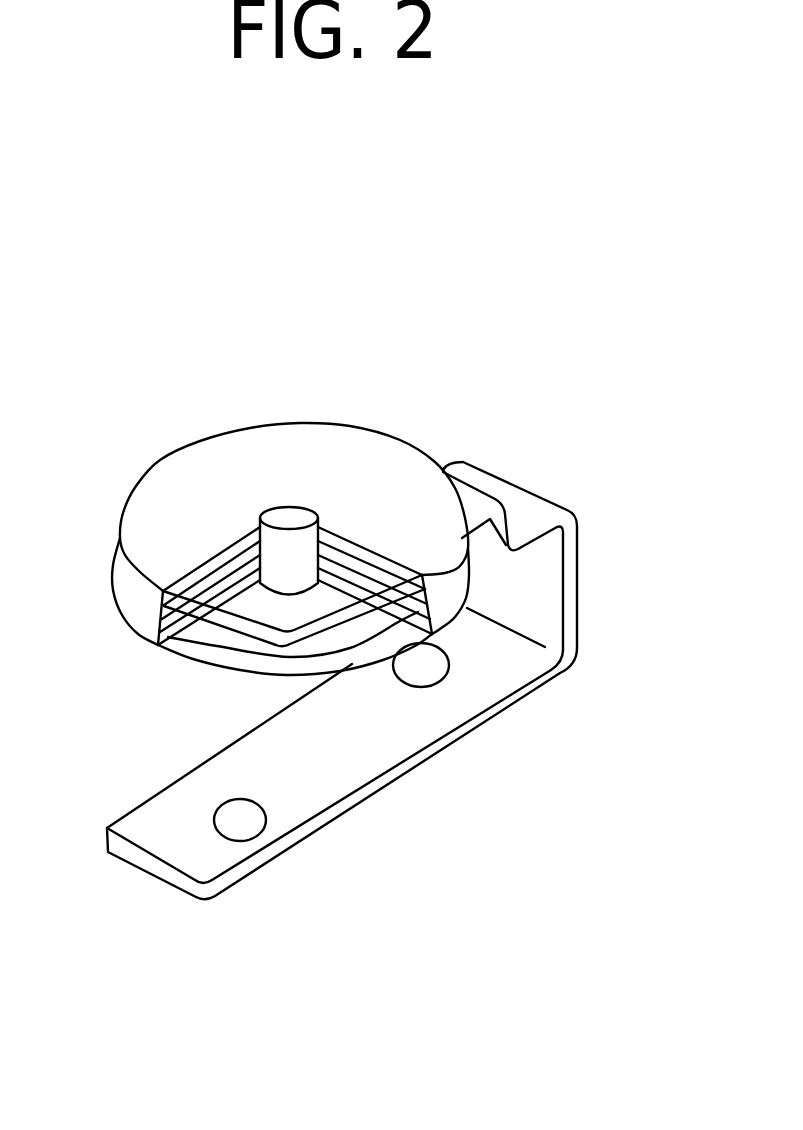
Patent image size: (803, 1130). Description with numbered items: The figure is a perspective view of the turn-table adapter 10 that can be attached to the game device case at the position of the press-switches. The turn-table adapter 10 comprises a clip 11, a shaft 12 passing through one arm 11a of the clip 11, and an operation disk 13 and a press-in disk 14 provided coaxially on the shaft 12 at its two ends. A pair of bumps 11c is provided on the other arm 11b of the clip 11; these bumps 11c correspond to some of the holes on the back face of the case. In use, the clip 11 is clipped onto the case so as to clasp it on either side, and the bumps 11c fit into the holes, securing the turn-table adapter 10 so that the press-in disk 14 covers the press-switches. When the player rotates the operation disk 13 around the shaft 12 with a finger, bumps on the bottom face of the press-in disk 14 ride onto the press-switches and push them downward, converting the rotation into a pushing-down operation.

The turn-table adapter 10 is at (643, 237).
The clip 11 is at (386, 641).
The arm of the clip 11a is at (462, 498).
The other arm of the clip 11b is at (350, 801).
The bumps 11c is at (243, 822).
The shaft 12 is at (282, 508).
The operation disk 13 is at (343, 450).
The press-in disk 14 is at (222, 661).